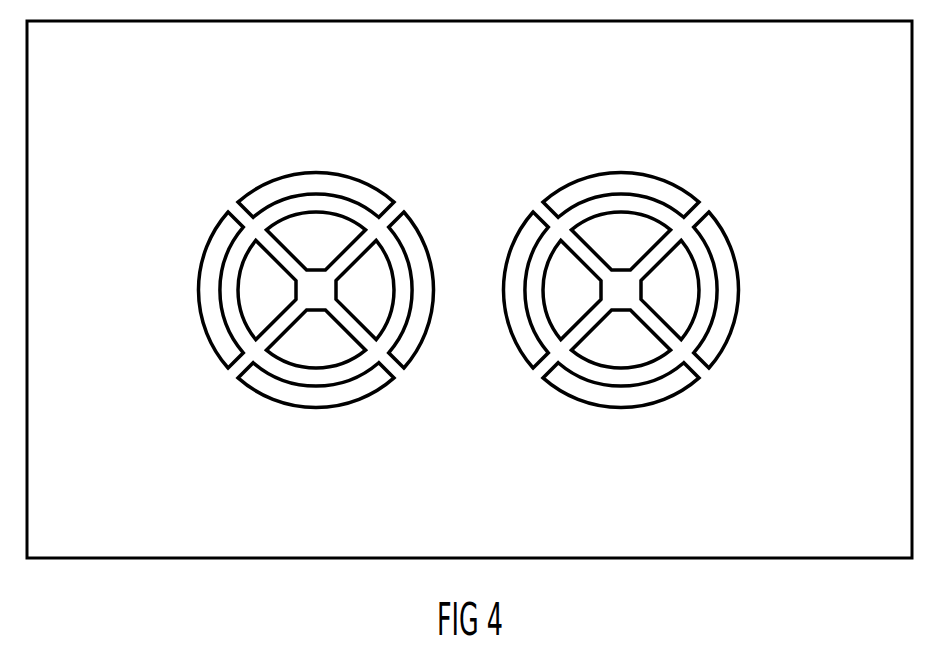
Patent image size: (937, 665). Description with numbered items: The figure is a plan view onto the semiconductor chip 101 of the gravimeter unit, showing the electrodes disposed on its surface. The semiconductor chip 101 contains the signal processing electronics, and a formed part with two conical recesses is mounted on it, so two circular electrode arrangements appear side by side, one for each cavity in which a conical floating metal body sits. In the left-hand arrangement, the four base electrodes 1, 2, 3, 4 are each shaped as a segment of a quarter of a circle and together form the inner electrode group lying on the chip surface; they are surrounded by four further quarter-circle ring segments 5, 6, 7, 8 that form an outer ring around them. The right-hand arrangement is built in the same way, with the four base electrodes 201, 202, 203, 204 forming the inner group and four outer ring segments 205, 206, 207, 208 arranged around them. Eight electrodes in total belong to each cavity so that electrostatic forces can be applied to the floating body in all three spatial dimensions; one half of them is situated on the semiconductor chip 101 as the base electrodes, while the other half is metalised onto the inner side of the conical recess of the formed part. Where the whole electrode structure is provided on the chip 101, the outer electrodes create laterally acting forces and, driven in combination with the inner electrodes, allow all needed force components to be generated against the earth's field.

The base electrode 1 is at (250, 285).
The base electrode 2 is at (297, 227).
The base electrode 3 is at (383, 287).
The base electrode 4 is at (312, 358).
The first outer ring electrode segment 5 is at (215, 320).
The second outer ring electrode segment 6 is at (327, 185).
The third outer ring electrode segment 7 is at (417, 245).
The fourth outer ring electrode segment 8 is at (350, 390).
The semiconductor chip 101 is at (612, 545).
The base electrode 201 is at (555, 293).
The base electrode 202 is at (610, 227).
The base electrode 203 is at (690, 287).
The base electrode 204 is at (615, 355).
The first outer ring electrode segment of second array 205 is at (530, 338).
The second outer ring electrode segment of second array 206 is at (638, 183).
The third outer ring electrode segment of second array 207 is at (725, 250).
The fourth outer ring electrode segment of second array 208 is at (652, 392).